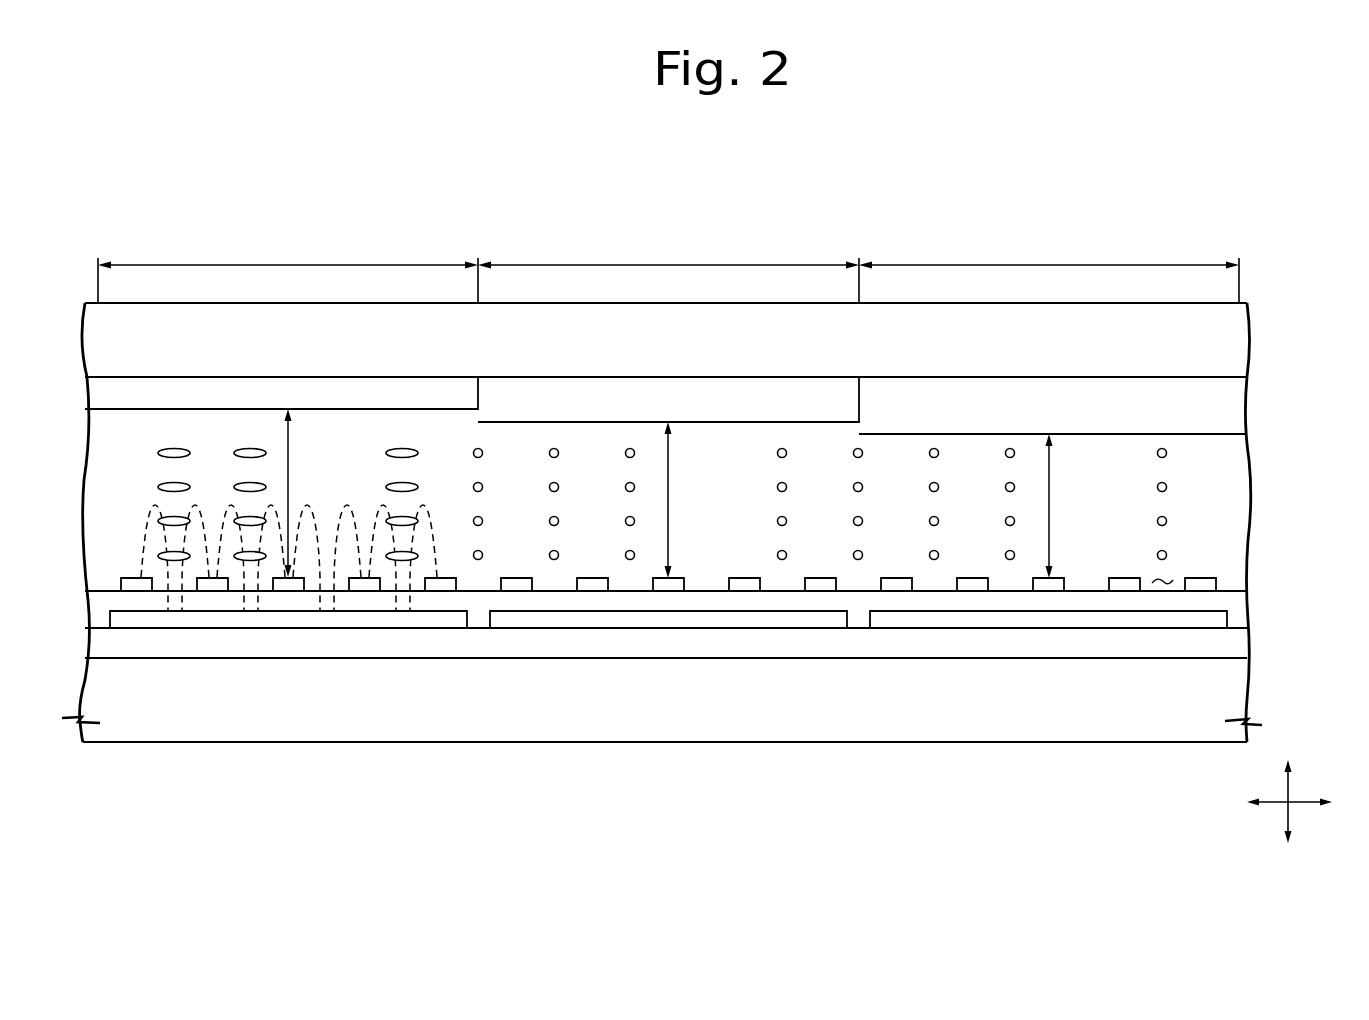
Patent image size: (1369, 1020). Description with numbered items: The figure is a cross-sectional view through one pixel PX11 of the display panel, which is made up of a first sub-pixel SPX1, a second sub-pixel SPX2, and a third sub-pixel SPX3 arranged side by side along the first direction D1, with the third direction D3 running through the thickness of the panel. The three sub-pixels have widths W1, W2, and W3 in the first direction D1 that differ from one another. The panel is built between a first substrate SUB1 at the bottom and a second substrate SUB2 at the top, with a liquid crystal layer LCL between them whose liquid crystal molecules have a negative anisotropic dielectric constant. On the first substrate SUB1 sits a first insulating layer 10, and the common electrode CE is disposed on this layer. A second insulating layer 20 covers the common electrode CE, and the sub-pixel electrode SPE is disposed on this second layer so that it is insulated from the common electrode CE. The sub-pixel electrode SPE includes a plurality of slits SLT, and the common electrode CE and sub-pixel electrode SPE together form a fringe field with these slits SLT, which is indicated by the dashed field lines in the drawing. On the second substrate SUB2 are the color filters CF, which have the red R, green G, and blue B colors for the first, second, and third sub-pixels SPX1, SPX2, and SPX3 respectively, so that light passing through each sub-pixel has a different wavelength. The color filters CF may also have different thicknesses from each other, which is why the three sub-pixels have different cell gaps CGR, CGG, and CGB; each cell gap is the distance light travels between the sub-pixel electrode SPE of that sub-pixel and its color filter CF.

The pixel PX11 is at (1182, 204).
The first sub-pixel SPX1 is at (362, 254).
The second sub-pixel SPX2 is at (743, 254).
The third sub-pixel SPX3 is at (1082, 254).
The width of first sub-pixel W1 is at (288, 254).
The width of second sub-pixel W2 is at (668, 254).
The width of third sub-pixel W3 is at (1049, 254).
The second substrate SUB2 is at (1228, 344).
The color filters CF is at (697, 405).
The red color R is at (288, 394).
The green color G is at (669, 401).
The blue color B is at (1049, 408).
The liquid crystal layer LCL is at (732, 510).
The cell gap of first sub-pixel CGR is at (306, 493).
The cell gap of second sub-pixel CGG is at (688, 500).
The cell gap of third sub-pixel CGB is at (1068, 506).
The sub-pixel electrode SPE is at (1202, 582).
The slits SLT is at (1162, 586).
The second insulating layer 20 is at (1232, 602).
The common electrode CE is at (1218, 620).
The first insulating layer 10 is at (1230, 646).
The first substrate SUB1 is at (1228, 693).
The third direction D3 is at (1288, 788).
The first direction D1 is at (1302, 803).